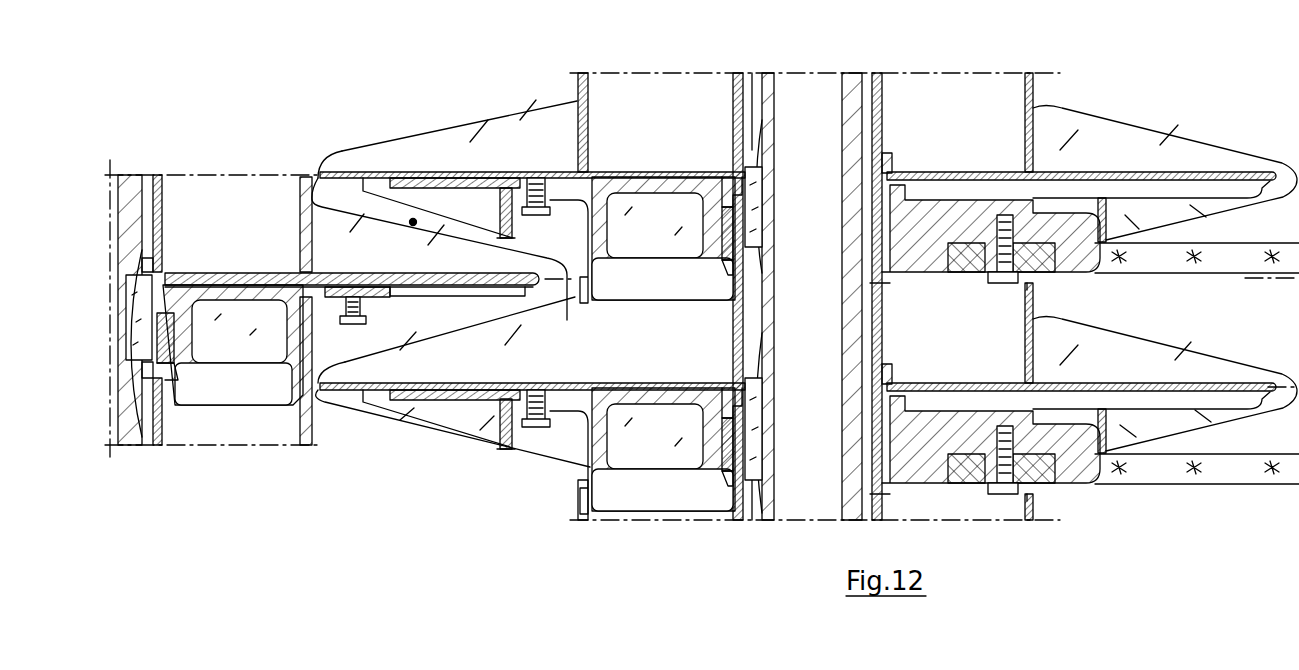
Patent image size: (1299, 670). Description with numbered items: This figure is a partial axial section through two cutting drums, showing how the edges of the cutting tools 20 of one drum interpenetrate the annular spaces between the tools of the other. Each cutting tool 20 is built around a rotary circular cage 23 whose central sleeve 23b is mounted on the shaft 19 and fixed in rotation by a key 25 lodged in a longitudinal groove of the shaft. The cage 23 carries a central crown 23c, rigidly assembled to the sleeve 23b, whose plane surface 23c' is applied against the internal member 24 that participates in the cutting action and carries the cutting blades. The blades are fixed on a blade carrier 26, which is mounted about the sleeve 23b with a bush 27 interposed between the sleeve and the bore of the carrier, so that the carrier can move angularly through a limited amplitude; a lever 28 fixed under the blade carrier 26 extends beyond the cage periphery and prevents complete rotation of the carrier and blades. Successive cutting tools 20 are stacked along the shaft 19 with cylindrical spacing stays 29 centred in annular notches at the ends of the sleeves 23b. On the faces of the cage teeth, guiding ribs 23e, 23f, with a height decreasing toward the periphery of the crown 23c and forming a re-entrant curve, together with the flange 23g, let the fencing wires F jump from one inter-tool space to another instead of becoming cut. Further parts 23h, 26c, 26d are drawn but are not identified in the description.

The shaft 19 is at (133, 437).
The cutting tool 20 is at (212, 158).
The rotary circular cage 23 is at (513, 165).
The central sleeve 23b is at (737, 158).
The central crown 23c is at (720, 186).
The plane surface 23c' is at (785, 476).
The guiding rib 23e is at (345, 235).
The lower guiding rib 23f is at (1197, 423).
The flange 23g is at (1045, 107).
The support ring 23h is at (1112, 205).
The internal member 24 is at (417, 180).
The key 25 is at (758, 166).
The blade carrier 26 is at (268, 410).
The bearing housing hub 26c is at (505, 400).
The bearing housing block 26d is at (566, 450).
The bush 27 is at (890, 170).
The lever 28 is at (1181, 255).
The cylindrical spacing stay 29 is at (752, 152).
The fencing wire F is at (411, 219).